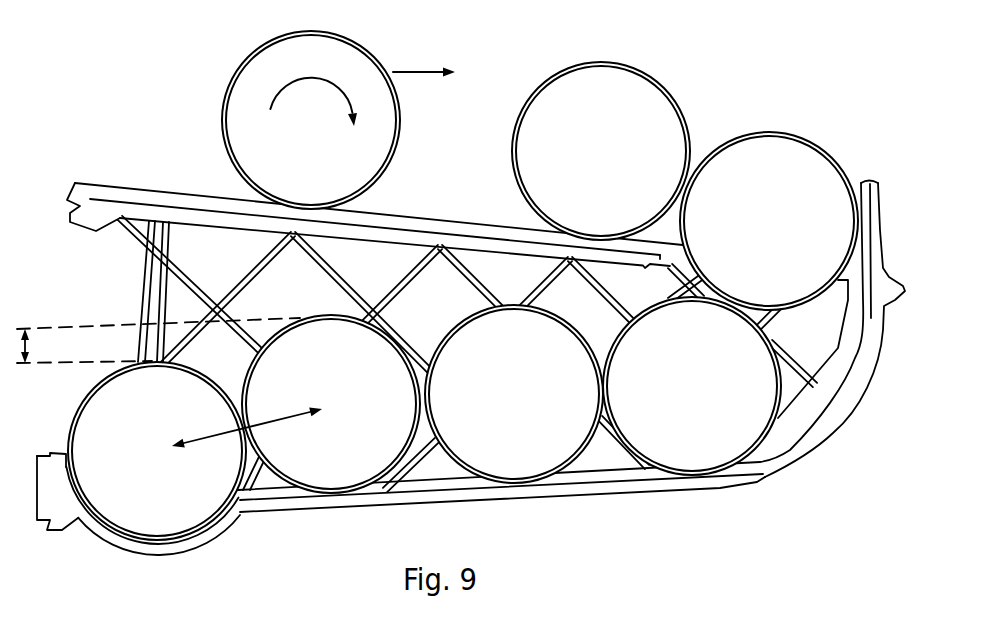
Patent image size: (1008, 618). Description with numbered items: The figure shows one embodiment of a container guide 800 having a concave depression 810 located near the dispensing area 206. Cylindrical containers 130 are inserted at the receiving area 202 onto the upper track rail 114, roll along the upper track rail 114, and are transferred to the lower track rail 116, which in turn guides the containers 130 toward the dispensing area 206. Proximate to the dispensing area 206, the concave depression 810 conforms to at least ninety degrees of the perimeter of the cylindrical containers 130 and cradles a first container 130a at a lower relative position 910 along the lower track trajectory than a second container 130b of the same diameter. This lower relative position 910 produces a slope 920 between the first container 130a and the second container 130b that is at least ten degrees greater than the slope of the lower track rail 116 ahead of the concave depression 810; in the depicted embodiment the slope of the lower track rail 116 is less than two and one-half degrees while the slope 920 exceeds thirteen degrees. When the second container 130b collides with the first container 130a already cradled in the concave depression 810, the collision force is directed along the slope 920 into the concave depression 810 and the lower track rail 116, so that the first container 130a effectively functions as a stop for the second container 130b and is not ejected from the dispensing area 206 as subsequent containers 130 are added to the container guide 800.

The receiving area 202 is at (104, 143).
The dispensing area 206 is at (101, 288).
The upper track rail 114 is at (207, 206).
The container guide 800 is at (450, 215).
The lower track rail 116 is at (612, 486).
The concave depression 810 is at (193, 540).
The lower relative position 910 is at (33, 352).
The slope 920 is at (200, 440).
The container 130 is at (295, 137).
The first container 130a is at (135, 460).
The second container 130b is at (313, 415).